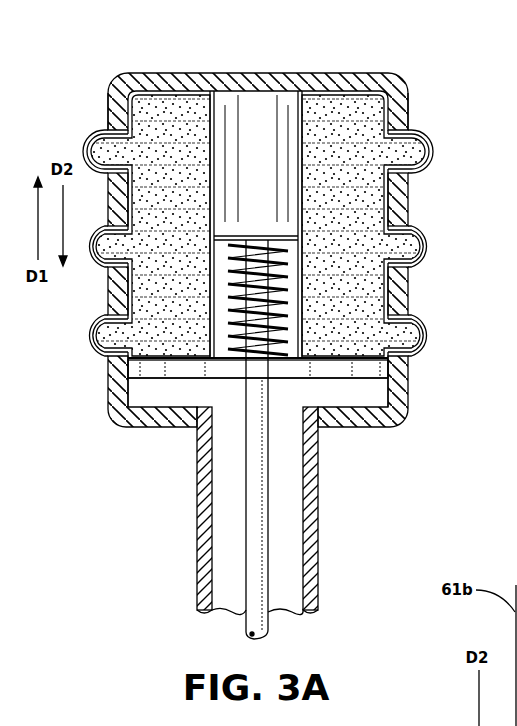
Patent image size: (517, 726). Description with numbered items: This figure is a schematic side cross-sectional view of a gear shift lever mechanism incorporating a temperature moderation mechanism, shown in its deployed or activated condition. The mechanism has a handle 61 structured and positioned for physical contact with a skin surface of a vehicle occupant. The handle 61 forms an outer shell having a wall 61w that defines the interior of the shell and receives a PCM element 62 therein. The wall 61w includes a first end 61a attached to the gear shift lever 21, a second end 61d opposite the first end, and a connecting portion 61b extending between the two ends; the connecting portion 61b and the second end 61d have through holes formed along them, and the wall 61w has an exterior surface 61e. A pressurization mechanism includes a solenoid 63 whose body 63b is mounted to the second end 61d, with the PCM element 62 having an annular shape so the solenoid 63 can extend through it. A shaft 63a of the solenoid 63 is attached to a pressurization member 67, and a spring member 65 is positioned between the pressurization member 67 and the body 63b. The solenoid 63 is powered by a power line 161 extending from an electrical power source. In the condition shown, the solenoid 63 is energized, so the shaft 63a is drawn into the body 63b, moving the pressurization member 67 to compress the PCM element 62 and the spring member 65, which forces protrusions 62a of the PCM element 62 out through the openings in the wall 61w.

The handle 61 is at (150, 66).
The first end 61a is at (357, 427).
The connecting portion 61b is at (107, 123).
The second end 61d is at (158, 85).
The exterior surface 61e is at (400, 108).
The wall 61w is at (405, 203).
The PCM element 62 is at (144, 294).
The protrusions 62a is at (433, 150).
The solenoid 63 is at (262, 112).
The shaft 63a is at (120, 366).
The body 63b is at (278, 105).
The spring member 65 is at (233, 295).
The pressurization member 67 is at (110, 378).
The power line 161 is at (256, 505).
The gear shift lever 21 is at (320, 532).